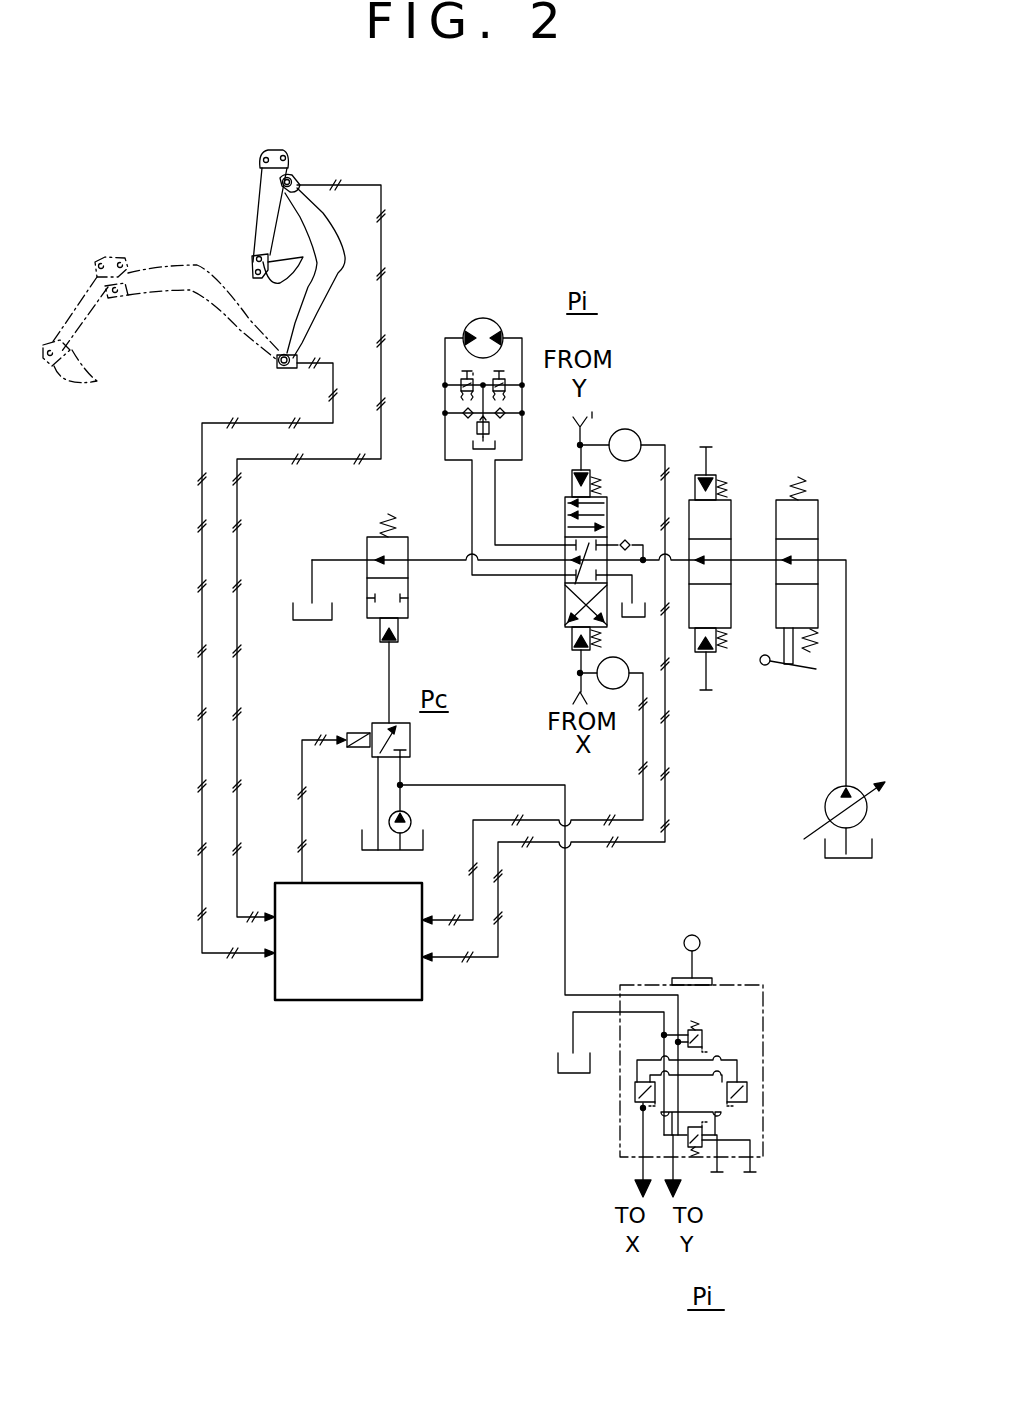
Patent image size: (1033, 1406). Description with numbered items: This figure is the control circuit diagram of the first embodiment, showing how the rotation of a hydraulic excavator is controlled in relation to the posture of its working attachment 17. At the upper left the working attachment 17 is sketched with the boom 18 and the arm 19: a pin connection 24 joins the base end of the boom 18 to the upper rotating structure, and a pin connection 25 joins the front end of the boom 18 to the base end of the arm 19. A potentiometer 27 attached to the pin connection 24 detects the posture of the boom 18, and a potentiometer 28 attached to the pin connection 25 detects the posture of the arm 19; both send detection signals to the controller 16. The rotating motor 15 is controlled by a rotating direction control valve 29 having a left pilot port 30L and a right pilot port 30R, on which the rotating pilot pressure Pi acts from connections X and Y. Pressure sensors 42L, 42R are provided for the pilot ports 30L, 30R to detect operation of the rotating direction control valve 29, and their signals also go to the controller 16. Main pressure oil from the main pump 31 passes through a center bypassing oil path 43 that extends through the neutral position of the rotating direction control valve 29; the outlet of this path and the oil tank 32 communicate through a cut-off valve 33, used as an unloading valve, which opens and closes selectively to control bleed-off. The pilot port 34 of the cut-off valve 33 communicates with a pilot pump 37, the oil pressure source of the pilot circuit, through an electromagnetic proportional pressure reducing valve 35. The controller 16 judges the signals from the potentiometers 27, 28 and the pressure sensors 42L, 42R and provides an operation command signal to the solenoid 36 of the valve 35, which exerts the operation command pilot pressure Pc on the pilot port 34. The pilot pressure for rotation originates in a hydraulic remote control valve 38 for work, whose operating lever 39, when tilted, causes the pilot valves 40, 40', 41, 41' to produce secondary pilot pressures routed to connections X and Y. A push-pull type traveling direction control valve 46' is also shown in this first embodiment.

The rotating motor 15 is at (483, 317).
The controller 16 is at (332, 1002).
The working attachment 17 is at (243, 165).
The boom 18 is at (322, 315).
The arm 19 is at (257, 225).
The pin connection 24 is at (275, 363).
The pin connection 25 is at (293, 176).
The potentiometer 27 is at (293, 368).
The potentiometer 28 is at (298, 181).
The rotating direction control valve 29 is at (565, 500).
The right pilot port 30R is at (575, 470).
The left pilot port 30L is at (573, 652).
The main pump 31 is at (831, 786).
The oil tank 32 is at (842, 860).
The cut-off valve 33 is at (410, 617).
The pilot port 34 is at (398, 643).
The electromagnetic proportional pressure reducing valve 35 is at (373, 727).
The solenoid 36 is at (345, 735).
The pilot pump 37 is at (413, 822).
The hydraulic remote control valve 38 is at (733, 969).
The operating lever 39 is at (692, 935).
The pilot valve 40 is at (606, 1109).
The pilot valve 40' is at (777, 1085).
The pilot valve 41 is at (726, 1170).
The pilot valve 41' is at (757, 1034).
The pressure sensor 42R is at (633, 433).
The pressure sensor 42L is at (622, 692).
The center bypassing oil path 43 is at (568, 589).
The traveling direction control valve 46' is at (825, 571).